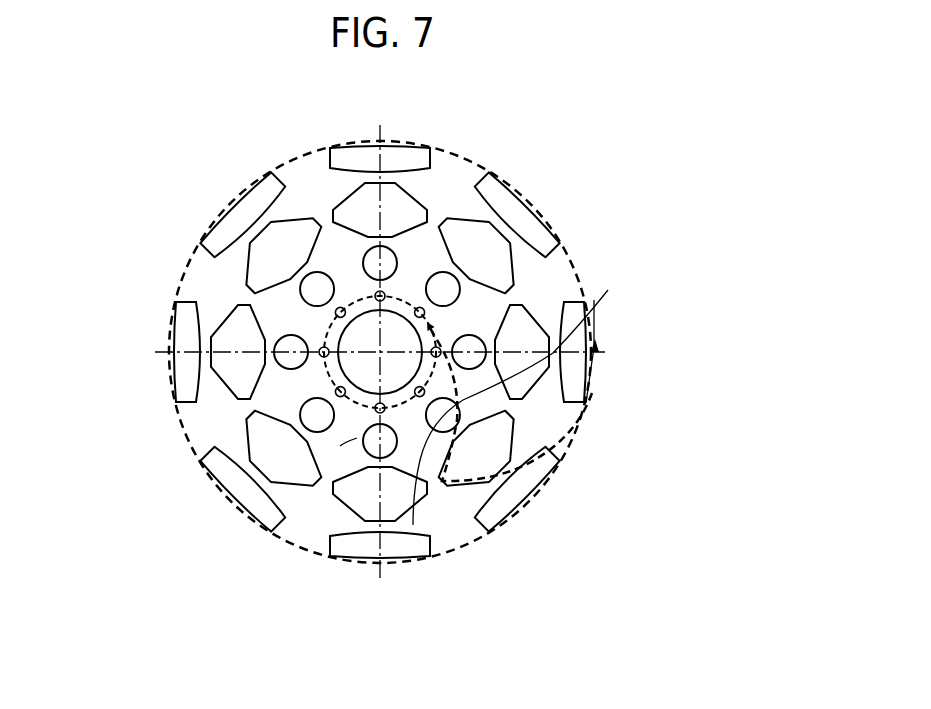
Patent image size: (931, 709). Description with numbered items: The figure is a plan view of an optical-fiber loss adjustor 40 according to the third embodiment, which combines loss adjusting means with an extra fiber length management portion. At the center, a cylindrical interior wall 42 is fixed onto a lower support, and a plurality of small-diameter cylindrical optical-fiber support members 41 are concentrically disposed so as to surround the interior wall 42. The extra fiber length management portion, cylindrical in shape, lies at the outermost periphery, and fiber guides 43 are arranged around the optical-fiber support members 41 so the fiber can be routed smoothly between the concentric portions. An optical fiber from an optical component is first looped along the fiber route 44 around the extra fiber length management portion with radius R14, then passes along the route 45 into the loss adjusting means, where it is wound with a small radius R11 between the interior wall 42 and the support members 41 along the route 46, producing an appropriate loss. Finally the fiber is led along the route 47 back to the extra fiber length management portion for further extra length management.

The optical-fiber loss adjustor 40 is at (450, 117).
The optical-fiber support member 41 is at (402, 577).
The interior wall 42 is at (346, 336).
The fiber guide 43 is at (452, 421).
The fiber route along extra fiber length management portion 44 is at (307, 548).
The route from extra fiber length management portion to loss adjusting means 45 is at (425, 522).
The optical fiber route inside loss adjusting means 46 is at (396, 298).
The route from loss adjusting means to extra fiber length management portion 47 is at (357, 438).